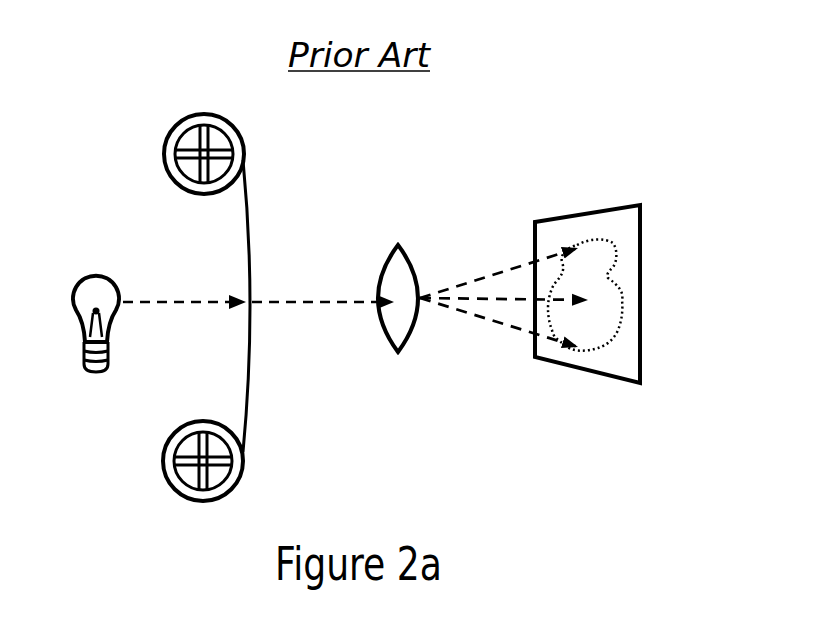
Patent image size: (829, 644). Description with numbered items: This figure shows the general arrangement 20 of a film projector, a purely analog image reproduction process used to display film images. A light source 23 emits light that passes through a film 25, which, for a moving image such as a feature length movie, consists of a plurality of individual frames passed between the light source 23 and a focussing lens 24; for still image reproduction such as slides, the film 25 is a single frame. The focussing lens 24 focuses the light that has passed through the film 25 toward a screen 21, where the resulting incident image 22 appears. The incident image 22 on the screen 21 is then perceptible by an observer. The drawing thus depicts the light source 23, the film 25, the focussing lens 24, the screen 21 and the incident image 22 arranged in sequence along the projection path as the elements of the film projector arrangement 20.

The general arrangement of a film projector 20 is at (607, 248).
The screen 21 is at (630, 203).
The incident image 22 is at (610, 273).
The light source 23 is at (118, 288).
The focussing lens 24 is at (408, 252).
The film 25 is at (250, 213).